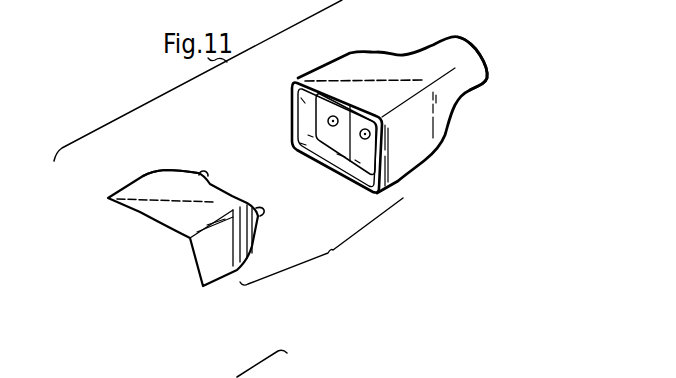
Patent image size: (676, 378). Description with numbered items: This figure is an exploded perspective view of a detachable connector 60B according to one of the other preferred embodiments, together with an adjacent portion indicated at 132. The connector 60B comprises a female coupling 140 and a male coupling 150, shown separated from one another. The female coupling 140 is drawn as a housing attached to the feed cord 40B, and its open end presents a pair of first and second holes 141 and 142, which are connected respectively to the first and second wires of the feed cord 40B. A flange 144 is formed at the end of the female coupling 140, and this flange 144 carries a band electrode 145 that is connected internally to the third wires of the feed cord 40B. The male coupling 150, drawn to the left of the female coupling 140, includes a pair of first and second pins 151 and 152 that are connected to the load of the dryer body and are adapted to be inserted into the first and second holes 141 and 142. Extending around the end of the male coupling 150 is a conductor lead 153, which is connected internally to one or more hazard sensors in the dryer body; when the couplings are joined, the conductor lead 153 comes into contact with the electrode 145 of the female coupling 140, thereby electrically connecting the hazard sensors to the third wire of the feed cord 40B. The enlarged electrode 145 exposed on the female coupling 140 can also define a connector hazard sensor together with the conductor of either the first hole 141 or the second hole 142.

The hose section 132 is at (110, 5).
The female coupling 140 is at (368, 67).
The flange 144 is at (297, 80).
The band electrode 145 is at (352, 160).
The first hole 141 is at (328, 121).
The second hole 142 is at (367, 137).
The feed cord 40B is at (462, 73).
The connector 60B is at (321, 241).
The male coupling 150 is at (215, 252).
The first pin 151 is at (204, 171).
The second pin 152 is at (259, 206).
The conductor lead 153 is at (182, 177).